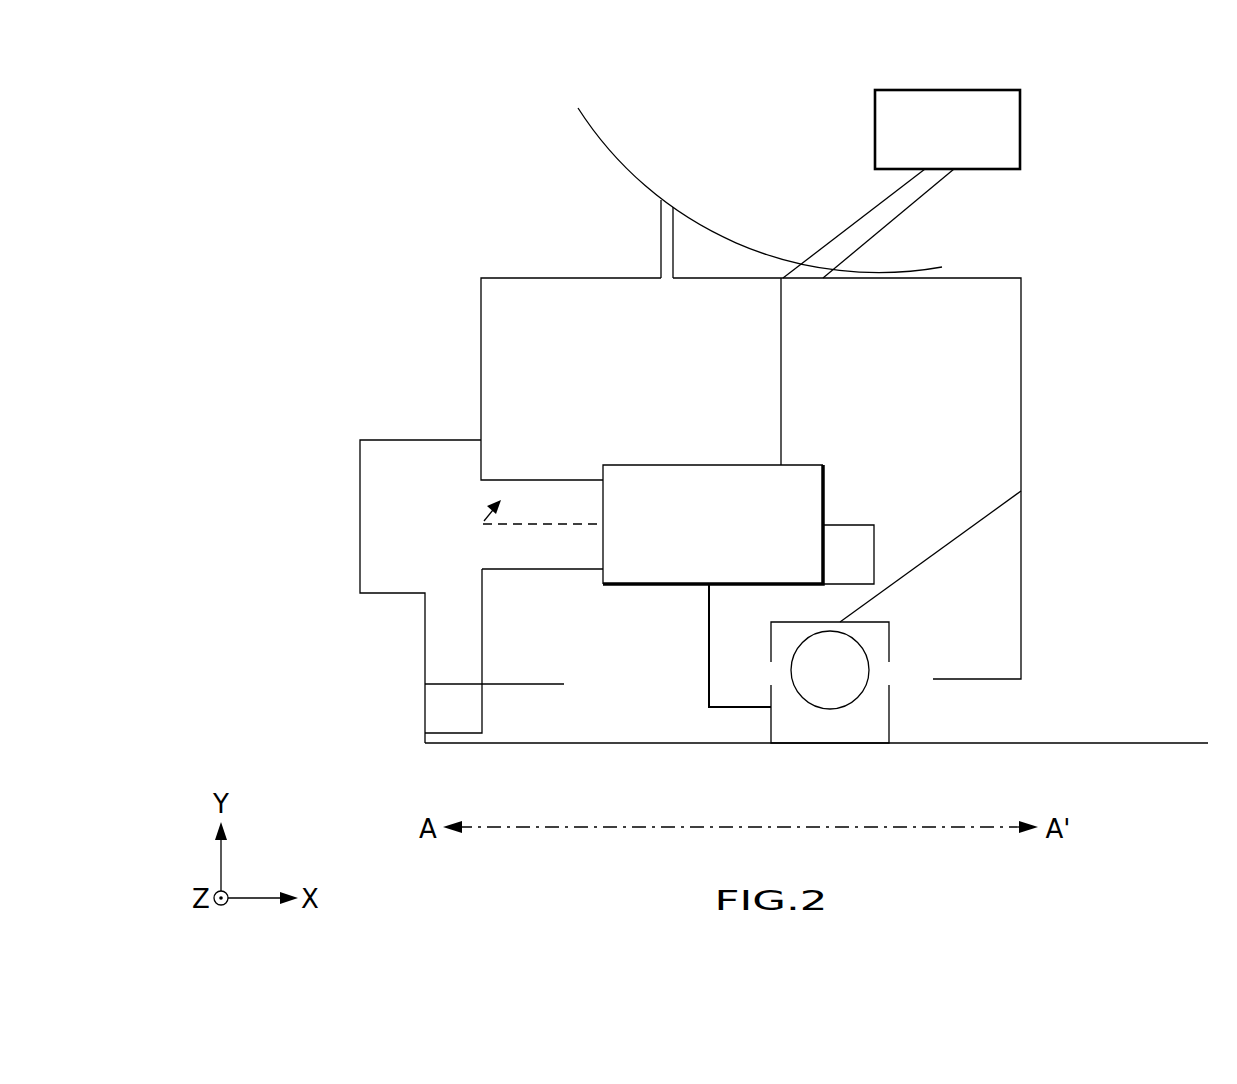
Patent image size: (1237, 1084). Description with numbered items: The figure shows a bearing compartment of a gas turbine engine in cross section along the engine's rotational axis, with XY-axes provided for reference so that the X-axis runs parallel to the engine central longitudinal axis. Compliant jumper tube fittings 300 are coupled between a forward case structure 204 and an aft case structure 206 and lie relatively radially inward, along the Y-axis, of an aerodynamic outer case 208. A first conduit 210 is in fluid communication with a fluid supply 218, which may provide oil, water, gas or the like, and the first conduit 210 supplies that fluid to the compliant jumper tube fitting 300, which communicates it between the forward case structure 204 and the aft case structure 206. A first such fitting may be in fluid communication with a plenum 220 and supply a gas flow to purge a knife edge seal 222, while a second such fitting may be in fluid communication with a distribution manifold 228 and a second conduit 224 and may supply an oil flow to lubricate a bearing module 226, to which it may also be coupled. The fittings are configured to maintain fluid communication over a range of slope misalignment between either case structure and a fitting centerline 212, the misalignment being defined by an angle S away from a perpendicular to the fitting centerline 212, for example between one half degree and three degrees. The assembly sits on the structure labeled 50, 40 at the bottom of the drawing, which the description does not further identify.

The forward case structure 204 is at (518, 250).
The aft case structure 206 is at (1050, 370).
The aerodynamic outer case 208 is at (655, 198).
The first conduit 210 is at (908, 207).
The fluid supply 218 is at (1022, 137).
The plenum 220 is at (387, 460).
The fitting centerline 212 is at (520, 524).
The knife edge seal 222 is at (442, 712).
The compliant jumper tube fitting 300 is at (729, 530).
The distribution manifold 228 is at (875, 540).
The second conduit 224 is at (708, 648).
The bearing module 226 is at (918, 647).
The substrate / base 50 is at (816, 713).
The substrate / base 40 is at (1093, 742).